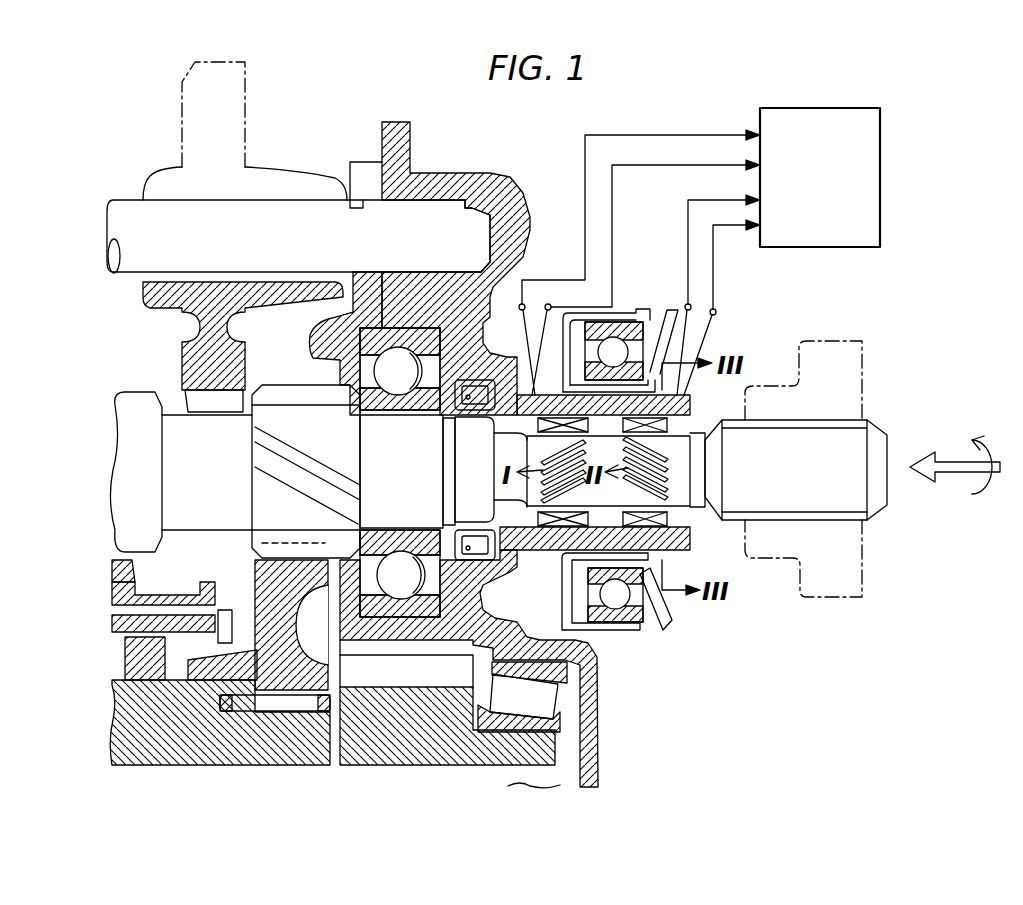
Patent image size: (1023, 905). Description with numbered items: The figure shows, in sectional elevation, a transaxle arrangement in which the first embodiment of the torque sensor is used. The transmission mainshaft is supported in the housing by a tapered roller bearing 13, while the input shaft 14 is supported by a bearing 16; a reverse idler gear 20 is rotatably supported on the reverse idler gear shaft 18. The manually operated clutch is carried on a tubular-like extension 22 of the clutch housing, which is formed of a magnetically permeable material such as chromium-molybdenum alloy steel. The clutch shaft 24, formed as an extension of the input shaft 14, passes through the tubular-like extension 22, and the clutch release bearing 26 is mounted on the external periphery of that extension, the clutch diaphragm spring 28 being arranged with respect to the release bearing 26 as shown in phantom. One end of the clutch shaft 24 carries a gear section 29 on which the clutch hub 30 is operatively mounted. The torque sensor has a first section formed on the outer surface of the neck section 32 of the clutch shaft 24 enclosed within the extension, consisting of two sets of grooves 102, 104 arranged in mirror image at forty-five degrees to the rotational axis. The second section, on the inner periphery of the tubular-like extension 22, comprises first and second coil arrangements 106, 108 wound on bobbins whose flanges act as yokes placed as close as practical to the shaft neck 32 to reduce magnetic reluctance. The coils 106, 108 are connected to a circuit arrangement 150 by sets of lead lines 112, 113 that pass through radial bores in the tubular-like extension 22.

The tapered roller bearing 13 is at (540, 703).
The input shaft 14 is at (168, 448).
The bearing 16 is at (388, 372).
The reverse idler gear shaft 18 is at (118, 212).
The reverse idler gear 20 is at (182, 142).
The tubular-like extension 22 is at (693, 545).
The clutch shaft 24 is at (848, 478).
The clutch release bearing 26 is at (613, 592).
The clutch diaphragm spring 28 is at (672, 620).
The gear section 29 is at (823, 520).
The clutch hub 30 is at (867, 540).
The neck section 32 is at (683, 456).
The set of grooves 102 is at (522, 447).
The set of grooves 104 is at (665, 478).
The first coil arrangement 106 is at (543, 510).
The second coil arrangement 108 is at (657, 516).
The lead lines 112 is at (603, 180).
The lead lines 113 is at (713, 262).
The circuit arrangement 150 is at (840, 248).